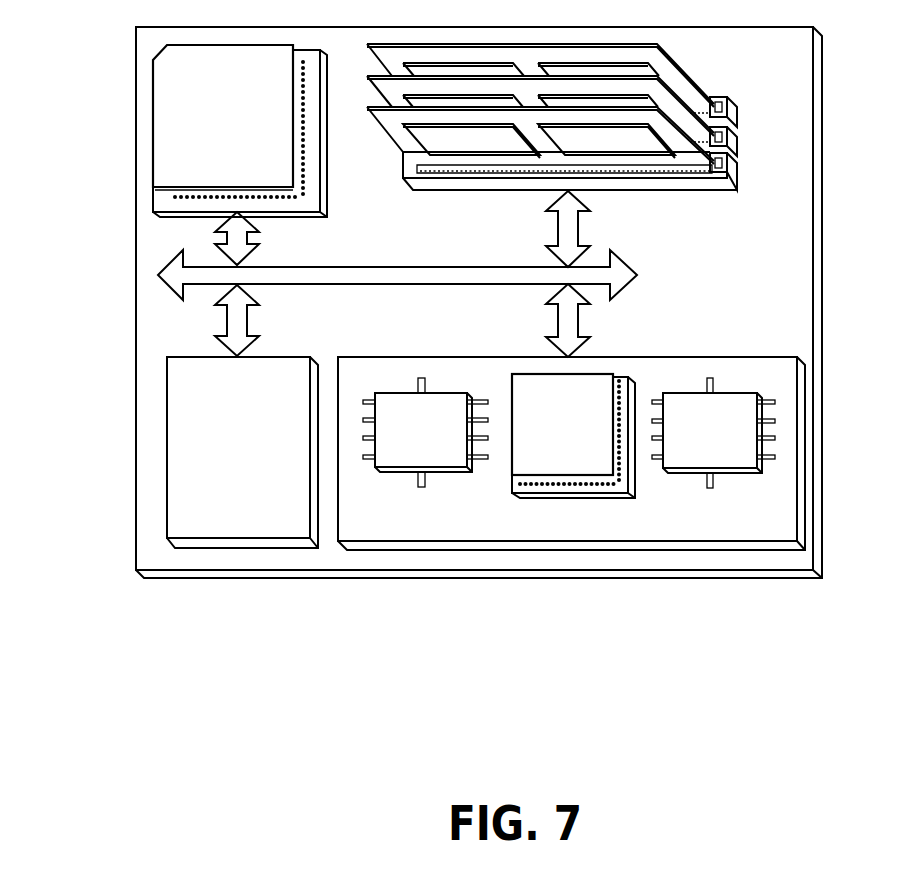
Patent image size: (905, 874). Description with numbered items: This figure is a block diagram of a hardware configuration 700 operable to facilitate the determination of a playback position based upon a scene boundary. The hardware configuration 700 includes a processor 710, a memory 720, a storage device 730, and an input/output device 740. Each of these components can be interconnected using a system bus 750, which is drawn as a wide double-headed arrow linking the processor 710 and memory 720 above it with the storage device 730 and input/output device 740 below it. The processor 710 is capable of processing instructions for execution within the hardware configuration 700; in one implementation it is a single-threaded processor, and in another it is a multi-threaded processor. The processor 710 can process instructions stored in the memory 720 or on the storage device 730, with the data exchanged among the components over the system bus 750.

The hardware configuration 700 is at (118, 695).
The processor 710 is at (283, 180).
The memory 720 is at (713, 91).
The storage device 730 is at (295, 533).
The input/output device 740 is at (757, 357).
The system bus 750 is at (393, 284).